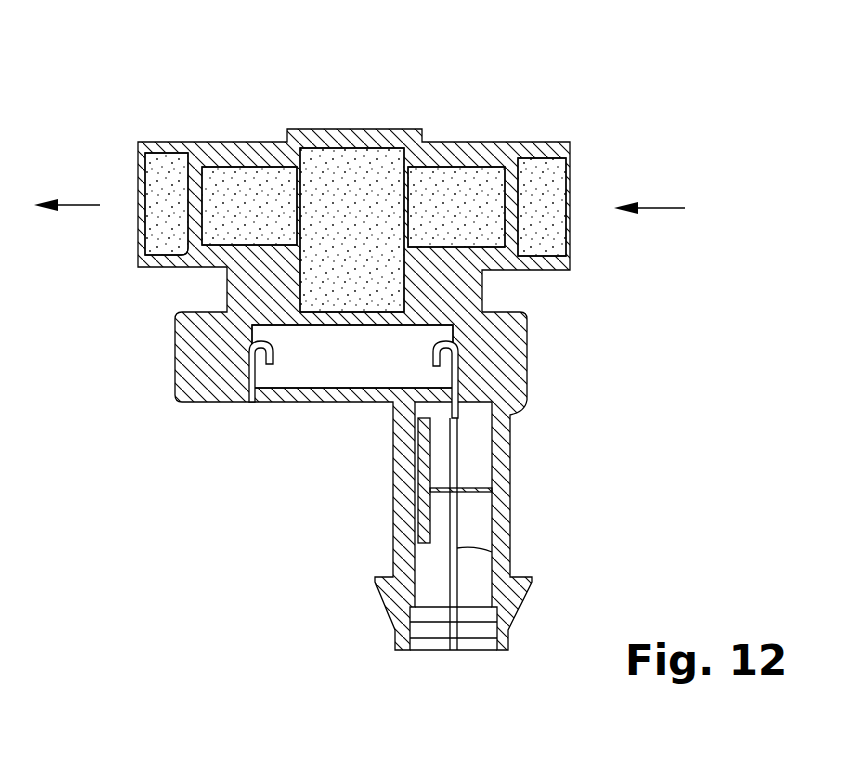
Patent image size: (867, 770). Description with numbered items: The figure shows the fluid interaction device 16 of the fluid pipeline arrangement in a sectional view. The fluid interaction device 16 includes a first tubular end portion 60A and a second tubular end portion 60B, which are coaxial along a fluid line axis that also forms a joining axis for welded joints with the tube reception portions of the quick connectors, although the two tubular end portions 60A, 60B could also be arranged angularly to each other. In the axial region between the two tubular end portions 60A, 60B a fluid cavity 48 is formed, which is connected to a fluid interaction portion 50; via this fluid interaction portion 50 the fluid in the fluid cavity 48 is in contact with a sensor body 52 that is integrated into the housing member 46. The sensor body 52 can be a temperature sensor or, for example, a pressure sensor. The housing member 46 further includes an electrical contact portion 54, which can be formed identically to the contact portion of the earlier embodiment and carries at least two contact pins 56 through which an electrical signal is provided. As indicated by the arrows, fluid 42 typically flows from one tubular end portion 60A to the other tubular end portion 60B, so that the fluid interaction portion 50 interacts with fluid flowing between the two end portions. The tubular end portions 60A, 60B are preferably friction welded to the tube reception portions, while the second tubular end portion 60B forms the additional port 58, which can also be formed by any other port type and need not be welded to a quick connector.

The fluid interaction device 16 is at (620, 104).
The fluid 42 is at (75, 205).
The housing member 46 is at (459, 128).
The fluid cavity 48 is at (352, 150).
The fluid interaction portion 50 is at (355, 316).
The sensor body 52 is at (296, 376).
The electrical contact portion 54 is at (524, 515).
The contact pins 56 is at (492, 553).
The additional port 58 is at (240, 128).
The first tubular end portion 60A is at (545, 145).
The second tubular end portion 60B is at (165, 142).